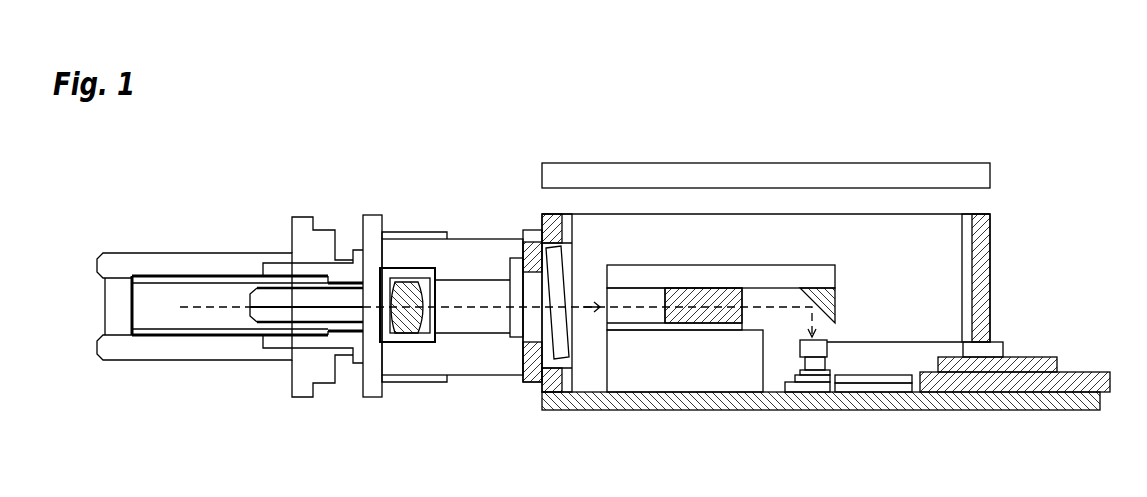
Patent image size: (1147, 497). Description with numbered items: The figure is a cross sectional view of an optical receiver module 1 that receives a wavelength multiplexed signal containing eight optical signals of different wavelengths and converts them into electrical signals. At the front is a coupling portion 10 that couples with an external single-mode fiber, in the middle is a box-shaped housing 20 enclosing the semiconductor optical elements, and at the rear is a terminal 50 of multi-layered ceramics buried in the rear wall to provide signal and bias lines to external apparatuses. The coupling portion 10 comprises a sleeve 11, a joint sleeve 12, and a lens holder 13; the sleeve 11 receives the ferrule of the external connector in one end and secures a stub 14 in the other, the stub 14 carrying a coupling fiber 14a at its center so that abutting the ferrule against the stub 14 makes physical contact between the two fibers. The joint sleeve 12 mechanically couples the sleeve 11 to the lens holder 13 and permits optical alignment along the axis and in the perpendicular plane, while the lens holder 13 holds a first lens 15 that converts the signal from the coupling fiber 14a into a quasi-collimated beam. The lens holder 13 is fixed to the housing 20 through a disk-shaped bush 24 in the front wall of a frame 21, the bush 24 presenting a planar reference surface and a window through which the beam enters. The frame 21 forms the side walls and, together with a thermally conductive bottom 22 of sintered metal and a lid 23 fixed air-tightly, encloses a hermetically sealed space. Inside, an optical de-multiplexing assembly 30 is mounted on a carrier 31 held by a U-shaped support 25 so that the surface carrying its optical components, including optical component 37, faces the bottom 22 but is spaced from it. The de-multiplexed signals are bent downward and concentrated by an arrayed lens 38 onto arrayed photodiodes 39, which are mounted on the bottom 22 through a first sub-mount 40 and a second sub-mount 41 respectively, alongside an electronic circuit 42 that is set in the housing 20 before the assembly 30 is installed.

The optical receiver module 1 is at (534, 126).
The coupling portion 10 is at (510, 186).
The sleeve 11 is at (189, 361).
The joint sleeve 12 is at (401, 383).
The lens holder 13 is at (472, 375).
The stub 14 is at (293, 322).
The coupling fiber 14a is at (336, 310).
The first lens 15 is at (407, 297).
The housing 20 is at (988, 152).
The frame 21 is at (548, 222).
The bottom 22 is at (688, 402).
The lid 23 is at (990, 178).
The bush 24 is at (540, 384).
The support 25 is at (621, 368).
The optical de-multiplexing assembly 30 is at (730, 264).
The carrier 31 is at (793, 265).
The optical component 37 is at (832, 304).
The arrayed lens 38 is at (806, 343).
The arrayed photodiodes 39 is at (805, 364).
The first sub-mount 40 is at (797, 388).
The second sub-mount 41 is at (880, 392).
The electronic circuit 42 is at (866, 376).
The terminal 50 is at (1035, 357).